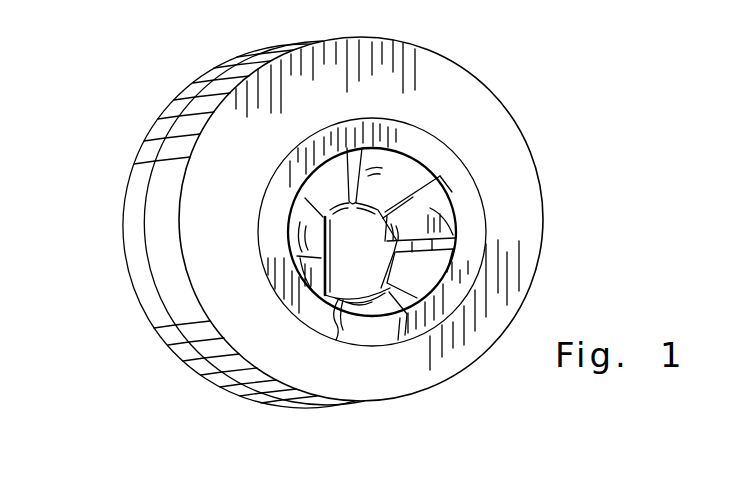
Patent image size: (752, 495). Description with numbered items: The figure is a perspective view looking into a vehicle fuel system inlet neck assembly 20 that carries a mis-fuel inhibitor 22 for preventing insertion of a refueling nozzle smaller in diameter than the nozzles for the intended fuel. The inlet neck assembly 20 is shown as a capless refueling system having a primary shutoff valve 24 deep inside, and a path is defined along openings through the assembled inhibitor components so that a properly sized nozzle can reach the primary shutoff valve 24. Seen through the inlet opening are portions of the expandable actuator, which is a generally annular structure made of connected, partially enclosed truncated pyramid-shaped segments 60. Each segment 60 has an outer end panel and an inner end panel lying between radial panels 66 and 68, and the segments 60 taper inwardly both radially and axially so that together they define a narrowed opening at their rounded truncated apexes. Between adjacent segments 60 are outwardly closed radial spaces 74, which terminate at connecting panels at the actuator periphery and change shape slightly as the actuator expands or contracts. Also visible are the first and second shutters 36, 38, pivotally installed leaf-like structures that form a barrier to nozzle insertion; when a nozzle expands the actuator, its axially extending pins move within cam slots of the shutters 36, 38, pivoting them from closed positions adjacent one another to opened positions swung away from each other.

The vehicle fuel system inlet neck assembly 20 is at (137, 95).
The mis-fuel inhibitor 22 is at (423, 403).
The primary shutoff valve 24 is at (283, 428).
The first shutter 36 is at (371, 269).
The second shutter 38 is at (298, 254).
The truncated pyramid-shaped segments 60 is at (384, 166).
The radial panel 66 is at (414, 194).
The radial panel 68 is at (403, 335).
The outwardly closed radial spaces 74 is at (452, 232).